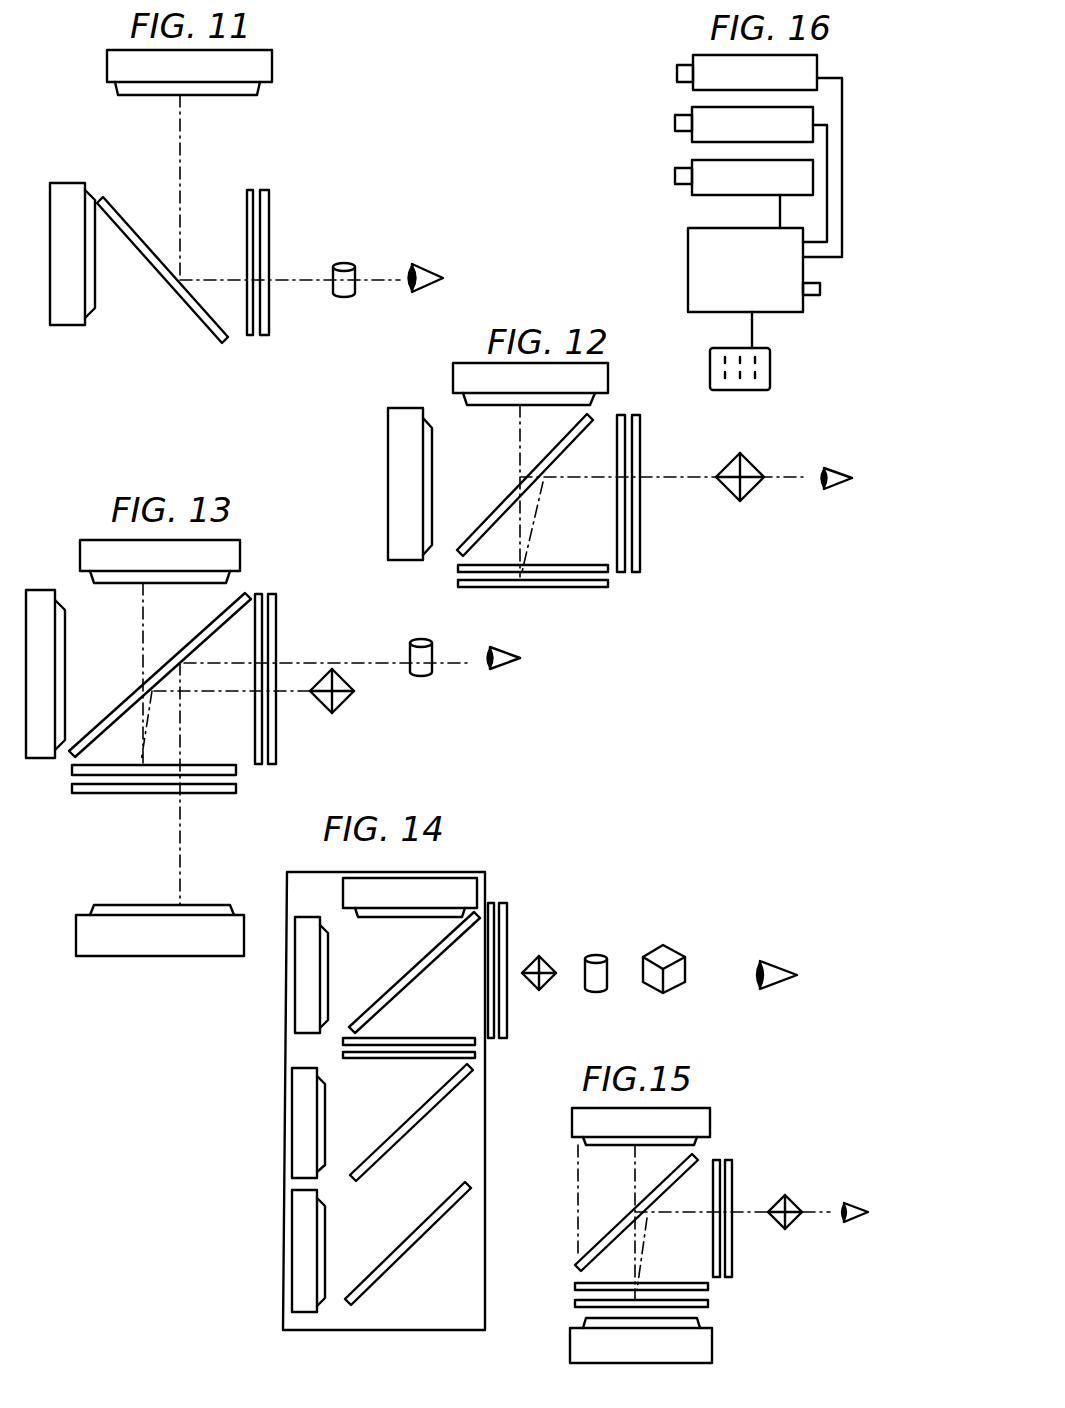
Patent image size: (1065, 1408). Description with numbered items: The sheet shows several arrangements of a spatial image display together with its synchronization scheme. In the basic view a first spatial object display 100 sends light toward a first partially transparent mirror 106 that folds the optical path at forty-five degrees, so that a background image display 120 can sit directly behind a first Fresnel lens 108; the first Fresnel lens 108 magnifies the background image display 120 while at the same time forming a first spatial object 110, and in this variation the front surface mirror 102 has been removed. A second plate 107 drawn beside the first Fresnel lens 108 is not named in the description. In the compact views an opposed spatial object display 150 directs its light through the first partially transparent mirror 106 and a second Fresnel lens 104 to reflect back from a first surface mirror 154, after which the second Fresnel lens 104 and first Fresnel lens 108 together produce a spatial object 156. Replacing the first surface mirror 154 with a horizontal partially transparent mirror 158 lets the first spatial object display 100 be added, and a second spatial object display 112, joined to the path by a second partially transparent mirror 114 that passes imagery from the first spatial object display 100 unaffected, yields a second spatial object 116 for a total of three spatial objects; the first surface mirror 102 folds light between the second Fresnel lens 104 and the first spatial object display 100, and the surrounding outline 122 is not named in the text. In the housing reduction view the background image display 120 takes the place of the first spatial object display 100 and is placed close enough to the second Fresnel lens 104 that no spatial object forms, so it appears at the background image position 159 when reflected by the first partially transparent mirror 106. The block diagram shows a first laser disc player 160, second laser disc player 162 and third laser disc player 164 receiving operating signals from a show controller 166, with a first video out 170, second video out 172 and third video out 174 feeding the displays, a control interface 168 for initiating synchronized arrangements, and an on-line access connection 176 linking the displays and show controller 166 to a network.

In FIG. 11, the first spatial object display 100 is at (107, 75).
In FIG. 13, the first spatial object display 100 is at (130, 905).
In FIG. 14, the first spatial object display 100 is at (292, 1240).
In FIG. 14, the first surface mirror 102 is at (410, 1250).
In FIG. 12, the second Fresnel lens 104 is at (570, 565).
In FIG. 13, the second Fresnel lens 104 is at (205, 765).
In FIG. 14, the second Fresnel lens 104 is at (400, 1038).
In FIG. 15, the second Fresnel lens 104 is at (672, 1283).
In FIG. 11, the first partially transparent mirror 106 is at (130, 243).
In FIG. 12, the first partially transparent mirror 106 is at (480, 530).
In FIG. 13, the first partially transparent mirror 106 is at (110, 718).
In FIG. 14, the first partially transparent mirror 106 is at (392, 990).
In FIG. 15, the first partially transparent mirror 106 is at (610, 1233).
In FIG. 11, the filter plate 107 is at (265, 190).
In FIG. 12, the filter plate 107 is at (640, 570).
In FIG. 13, the filter plate 107 is at (272, 594).
In FIG. 14, the filter plate 107 is at (507, 902).
In FIG. 15, the filter plate 107 is at (728, 1160).
In FIG. 11, the first Fresnel lens 108 is at (250, 190).
In FIG. 12, the first Fresnel lens 108 is at (620, 573).
In FIG. 13, the first Fresnel lens 108 is at (258, 594).
In FIG. 14, the first Fresnel lens 108 is at (490, 903).
In FIG. 15, the first Fresnel lens 108 is at (716, 1160).
In FIG. 11, the first spatial object 110 is at (341, 263).
In FIG. 13, the first spatial object 110 is at (425, 676).
In FIG. 14, the first spatial object 110 is at (600, 955).
In FIG. 14, the second spatial object display 112 is at (292, 1127).
In FIG. 14, the second partially transparent mirror 114 is at (400, 1140).
In FIG. 14, the second spatial object 116 is at (668, 957).
In FIG. 11, the background image display 120 is at (76, 325).
In FIG. 12, the background image display 120 is at (432, 428).
In FIG. 13, the background image display 120 is at (63, 632).
In FIG. 14, the background image display 120 is at (287, 990).
In FIG. 15, the background image display 120 is at (712, 1343).
In FIG. 14, the housing 122 is at (485, 1107).
In FIG. 12, the opposed spatial object display 150 is at (453, 378).
In FIG. 13, the opposed spatial object display 150 is at (240, 552).
In FIG. 14, the opposed spatial object display 150 is at (450, 887).
In FIG. 15, the opposed spatial object display 150 is at (710, 1122).
In FIG. 12, the first surface mirror 154 is at (573, 588).
In FIG. 12, the spatial object 156 is at (752, 492).
In FIG. 13, the spatial object 156 is at (345, 705).
In FIG. 14, the spatial object 156 is at (528, 962).
In FIG. 15, the spatial object 156 is at (790, 1198).
In FIG. 13, the horizontal partially transparent mirror 158 is at (140, 795).
In FIG. 14, the horizontal partially transparent mirror 158 is at (415, 1060).
In FIG. 15, the horizontal partially transparent mirror 158 is at (710, 1305).
In FIG. 15, the background image position 159 is at (578, 1205).
In FIG. 16, the first laser disc player 160 is at (772, 86).
In FIG. 16, the second laser disc player 162 is at (769, 138).
In FIG. 16, the third laser disc player 164 is at (769, 191).
In FIG. 16, the show controller 166 is at (688, 280).
In FIG. 16, the control interface 168 is at (770, 371).
In FIG. 16, the first video out 170 is at (677, 73).
In FIG. 16, the second video out 172 is at (675, 124).
In FIG. 16, the third video out 174 is at (675, 176).
In FIG. 16, the on-line access connection 176 is at (813, 295).